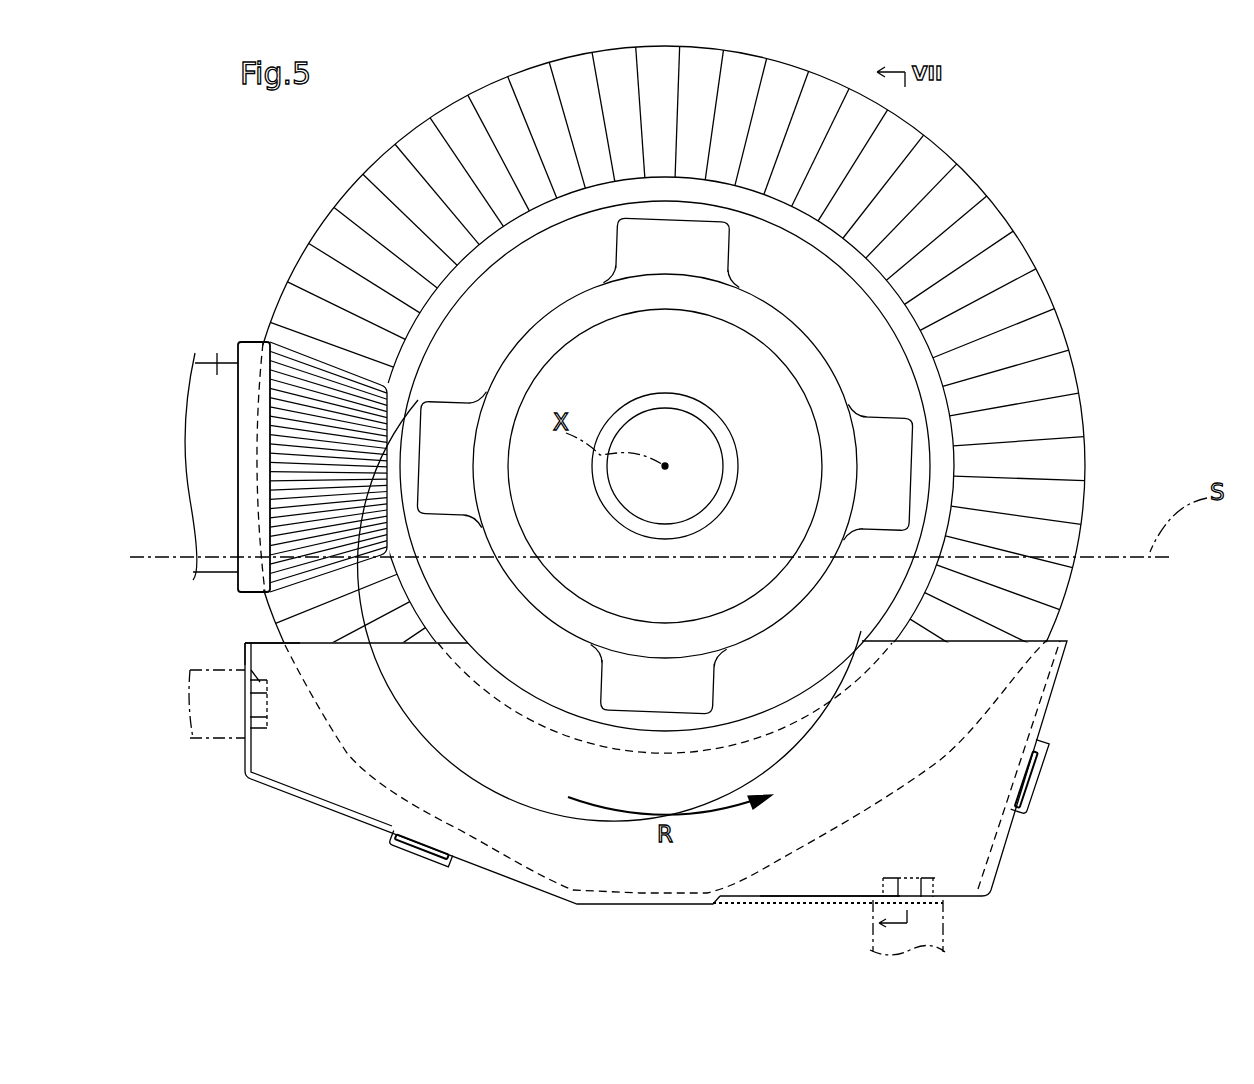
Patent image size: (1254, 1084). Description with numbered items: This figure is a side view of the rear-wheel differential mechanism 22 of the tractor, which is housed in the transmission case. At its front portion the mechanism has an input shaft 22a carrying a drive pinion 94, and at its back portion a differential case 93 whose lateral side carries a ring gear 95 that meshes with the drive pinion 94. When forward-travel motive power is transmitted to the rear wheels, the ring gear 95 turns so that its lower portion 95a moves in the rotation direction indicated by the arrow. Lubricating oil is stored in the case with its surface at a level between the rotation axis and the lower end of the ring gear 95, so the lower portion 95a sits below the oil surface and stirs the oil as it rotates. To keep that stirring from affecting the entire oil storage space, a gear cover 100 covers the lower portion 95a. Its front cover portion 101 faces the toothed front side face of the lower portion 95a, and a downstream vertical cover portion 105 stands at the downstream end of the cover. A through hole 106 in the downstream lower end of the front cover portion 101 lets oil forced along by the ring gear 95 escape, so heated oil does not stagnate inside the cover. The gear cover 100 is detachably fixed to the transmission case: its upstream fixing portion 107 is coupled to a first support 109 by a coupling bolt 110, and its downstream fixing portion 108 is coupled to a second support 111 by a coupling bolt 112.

The rear-wheel differential mechanism 22 is at (1124, 100).
The input shaft 22a is at (217, 360).
The differential case 93 is at (590, 300).
The drive pinion 94 is at (305, 367).
The ring gear 95 is at (1037, 298).
The lower portion 95a is at (383, 780).
The gear cover 100 is at (508, 892).
The front cover portion 101 is at (880, 740).
The downstream vertical cover portion 105 is at (1068, 683).
The through hole 106 is at (773, 910).
The upstream fixing portion 107 is at (245, 745).
The downstream fixing portion 108 is at (840, 896).
The first support 109 is at (193, 738).
The coupling bolt 110 is at (243, 647).
The second support 111 is at (945, 938).
The coupling bolt 112 is at (905, 878).